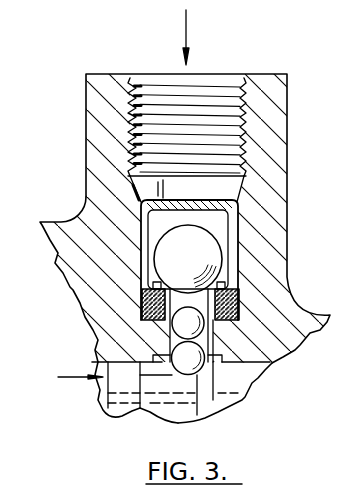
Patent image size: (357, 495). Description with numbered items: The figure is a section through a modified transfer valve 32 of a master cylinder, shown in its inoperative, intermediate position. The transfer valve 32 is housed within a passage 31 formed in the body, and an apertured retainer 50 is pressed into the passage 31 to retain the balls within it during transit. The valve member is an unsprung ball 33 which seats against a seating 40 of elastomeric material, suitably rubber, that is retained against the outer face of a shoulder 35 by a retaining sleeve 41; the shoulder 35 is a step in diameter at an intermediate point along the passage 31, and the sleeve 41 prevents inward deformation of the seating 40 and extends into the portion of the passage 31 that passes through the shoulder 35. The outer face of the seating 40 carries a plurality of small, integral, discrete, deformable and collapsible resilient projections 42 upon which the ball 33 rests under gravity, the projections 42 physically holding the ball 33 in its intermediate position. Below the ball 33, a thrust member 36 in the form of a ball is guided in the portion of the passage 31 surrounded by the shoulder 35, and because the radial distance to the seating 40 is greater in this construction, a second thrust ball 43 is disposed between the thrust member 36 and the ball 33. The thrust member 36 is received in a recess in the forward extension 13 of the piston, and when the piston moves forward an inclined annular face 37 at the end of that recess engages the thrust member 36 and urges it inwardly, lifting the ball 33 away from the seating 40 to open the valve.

The forward extension 13 is at (250, 384).
The passage 31 is at (247, 122).
The transfer valve 32 is at (178, 255).
The ball 33 is at (222, 258).
The shoulder 35 is at (232, 327).
The thrust member 36 is at (182, 373).
The inclined annular face 37 is at (208, 383).
The seating 40 is at (258, 315).
The retaining sleeve 41 is at (240, 389).
The resilient projections 42 is at (240, 300).
The second thrust ball 43 is at (168, 322).
The apertured retainer 50 is at (215, 192).